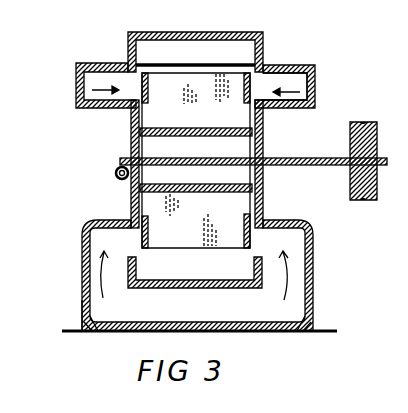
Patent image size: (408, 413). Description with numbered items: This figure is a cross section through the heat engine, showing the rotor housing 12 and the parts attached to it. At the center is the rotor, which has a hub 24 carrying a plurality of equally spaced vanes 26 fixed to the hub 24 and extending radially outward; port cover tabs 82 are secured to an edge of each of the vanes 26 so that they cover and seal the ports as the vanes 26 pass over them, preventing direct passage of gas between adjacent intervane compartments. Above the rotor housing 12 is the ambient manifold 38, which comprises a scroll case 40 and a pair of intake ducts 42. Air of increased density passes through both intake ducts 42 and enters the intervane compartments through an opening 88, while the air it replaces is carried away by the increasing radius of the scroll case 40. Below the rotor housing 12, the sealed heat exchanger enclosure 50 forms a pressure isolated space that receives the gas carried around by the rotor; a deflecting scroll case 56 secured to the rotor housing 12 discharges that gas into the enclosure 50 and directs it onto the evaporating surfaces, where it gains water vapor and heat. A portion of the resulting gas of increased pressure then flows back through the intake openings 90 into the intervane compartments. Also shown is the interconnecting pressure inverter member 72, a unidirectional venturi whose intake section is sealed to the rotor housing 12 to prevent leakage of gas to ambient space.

The rotor housing 12 is at (289, 214).
The hub 24 is at (202, 118).
The vanes 26 is at (262, 124).
The ambient manifold 38 is at (265, 67).
The scroll case 40 is at (211, 31).
The intake ducts 42 is at (75, 92).
The sealed heat exchanger enclosure 50 is at (308, 270).
The deflecting scroll case 56 is at (262, 282).
The interconnecting pressure inverter member 72 is at (118, 179).
The port cover tabs 82 is at (148, 89).
The opening 88 is at (131, 80).
The intake openings 90 is at (134, 241).